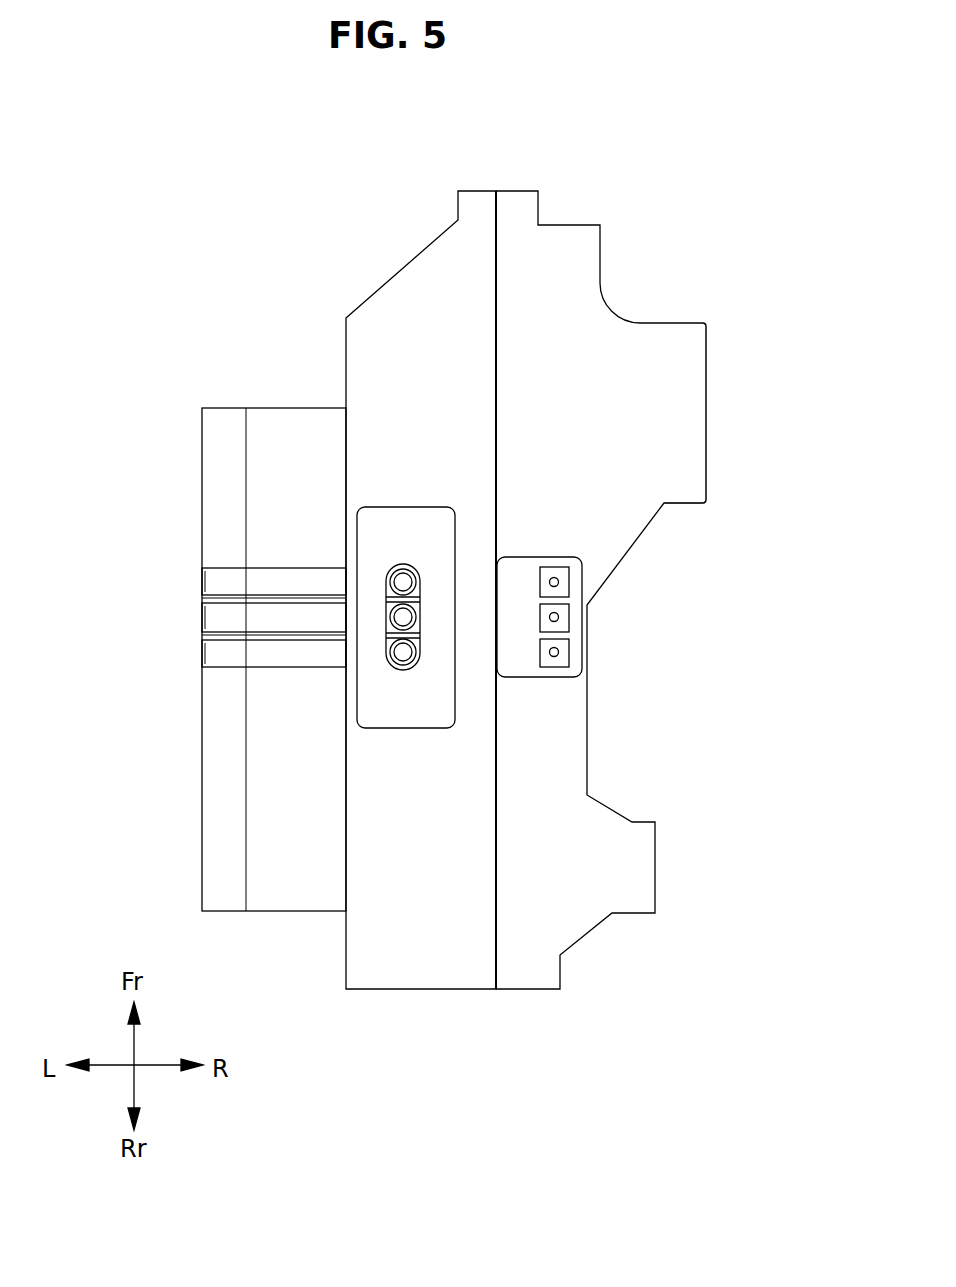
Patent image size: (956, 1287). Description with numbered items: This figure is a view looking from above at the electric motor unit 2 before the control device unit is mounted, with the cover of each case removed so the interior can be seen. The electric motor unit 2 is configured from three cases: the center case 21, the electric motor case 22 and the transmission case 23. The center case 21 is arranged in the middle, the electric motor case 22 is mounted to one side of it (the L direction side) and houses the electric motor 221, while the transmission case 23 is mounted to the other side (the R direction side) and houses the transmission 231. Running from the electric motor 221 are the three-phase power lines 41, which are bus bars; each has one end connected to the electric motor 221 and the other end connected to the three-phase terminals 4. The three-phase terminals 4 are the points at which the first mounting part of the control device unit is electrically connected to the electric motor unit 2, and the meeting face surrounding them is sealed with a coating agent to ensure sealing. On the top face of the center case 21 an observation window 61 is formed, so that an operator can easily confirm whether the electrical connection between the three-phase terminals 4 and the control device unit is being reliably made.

The electric motor unit 2 is at (502, 521).
The center case 21 is at (502, 566).
The electric motor case 22 is at (331, 590).
The electric motor 221 is at (280, 415).
The transmission case 23 is at (667, 575).
The transmission 231 is at (697, 437).
The three-phase power lines 41 is at (202, 583).
The observation window 61 is at (382, 663).
The three-phase terminals 4 is at (562, 653).